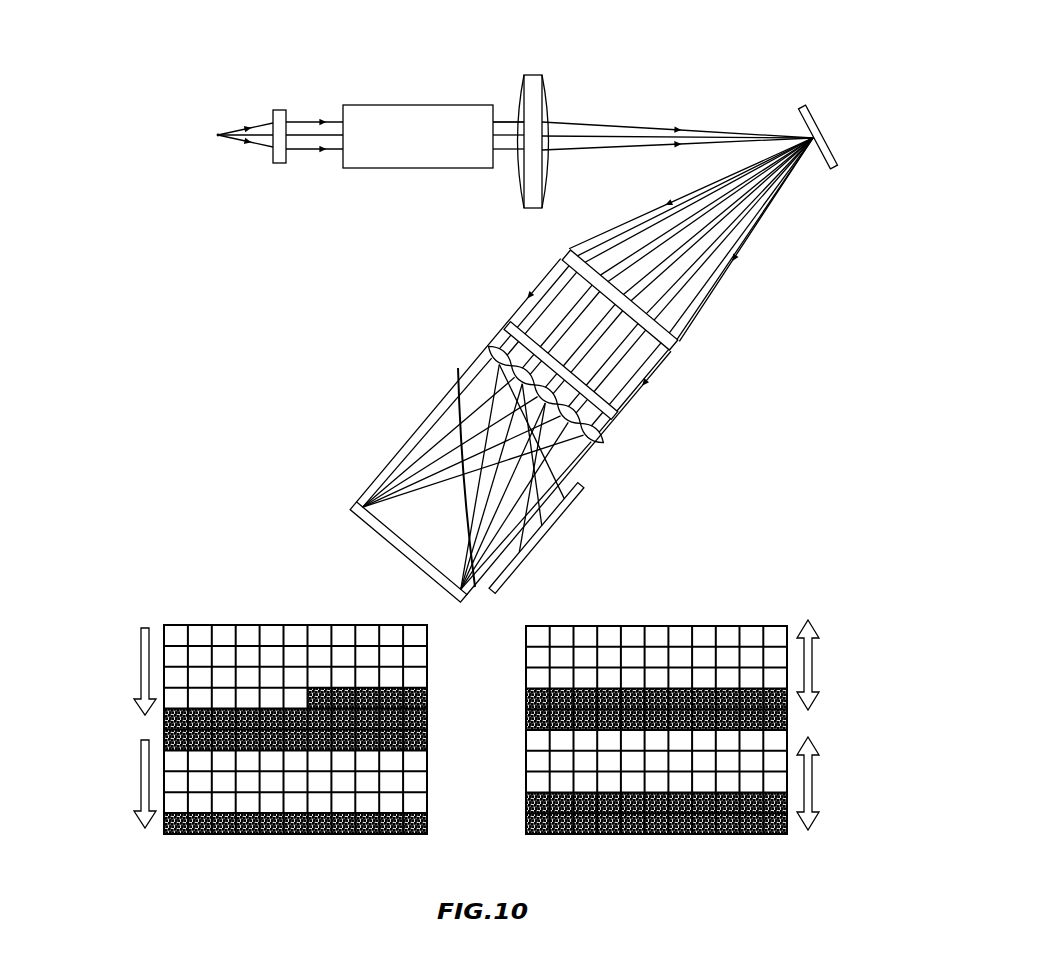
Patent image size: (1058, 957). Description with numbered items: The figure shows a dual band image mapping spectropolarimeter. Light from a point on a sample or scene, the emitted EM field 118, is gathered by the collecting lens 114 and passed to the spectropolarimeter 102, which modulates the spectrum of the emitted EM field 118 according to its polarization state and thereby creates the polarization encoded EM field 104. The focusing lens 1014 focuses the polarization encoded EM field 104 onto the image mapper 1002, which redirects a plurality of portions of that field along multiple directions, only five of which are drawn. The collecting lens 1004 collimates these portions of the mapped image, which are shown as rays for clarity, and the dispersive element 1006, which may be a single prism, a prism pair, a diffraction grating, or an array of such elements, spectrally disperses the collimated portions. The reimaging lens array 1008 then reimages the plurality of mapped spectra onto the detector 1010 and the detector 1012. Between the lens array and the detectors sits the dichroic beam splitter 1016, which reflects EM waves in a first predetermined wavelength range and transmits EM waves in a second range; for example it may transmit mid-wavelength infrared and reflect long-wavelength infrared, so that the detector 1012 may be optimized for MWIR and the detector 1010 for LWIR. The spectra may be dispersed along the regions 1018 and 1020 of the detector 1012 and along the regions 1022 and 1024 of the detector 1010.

The spectropolarimeter 102 is at (382, 105).
The polarization encoded EM field 104 is at (508, 123).
The collecting lens 114 is at (279, 108).
The emitted EM field 118 is at (242, 143).
The image mapper 1002 is at (812, 107).
The collecting lens 1004 is at (676, 346).
The dispersive element 1006 is at (615, 416).
The reimaging lens array 1008 is at (604, 448).
The detector array 1010 is at (568, 512).
The detector array 1012 is at (393, 547).
The focusing lens 1014 is at (532, 75).
The dichroic beam splitter 1016 is at (457, 403).
The region 1018 is at (137, 672).
The region 1020 is at (137, 800).
The region 1022 is at (815, 678).
The region 1024 is at (815, 790).